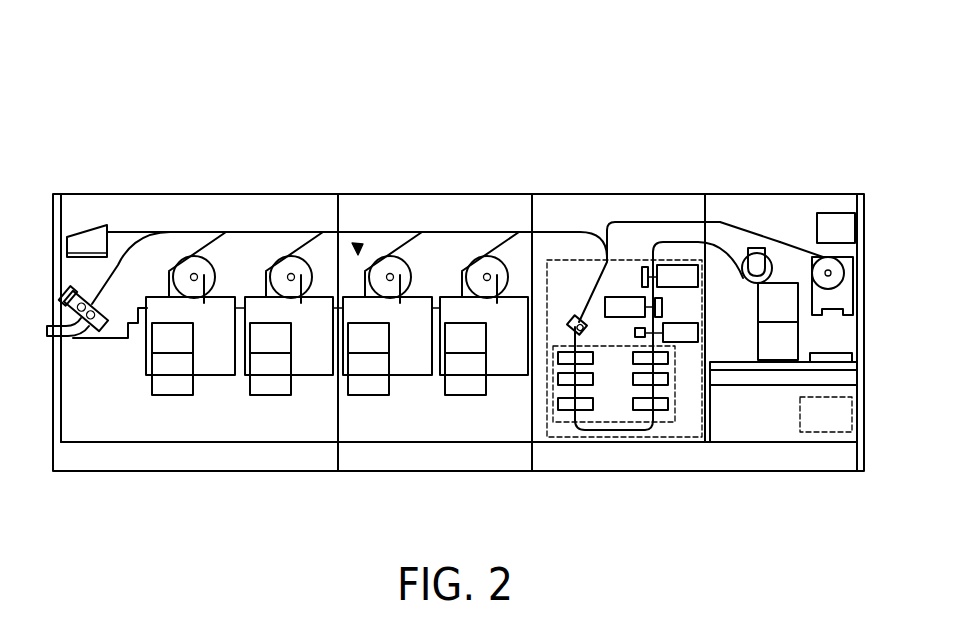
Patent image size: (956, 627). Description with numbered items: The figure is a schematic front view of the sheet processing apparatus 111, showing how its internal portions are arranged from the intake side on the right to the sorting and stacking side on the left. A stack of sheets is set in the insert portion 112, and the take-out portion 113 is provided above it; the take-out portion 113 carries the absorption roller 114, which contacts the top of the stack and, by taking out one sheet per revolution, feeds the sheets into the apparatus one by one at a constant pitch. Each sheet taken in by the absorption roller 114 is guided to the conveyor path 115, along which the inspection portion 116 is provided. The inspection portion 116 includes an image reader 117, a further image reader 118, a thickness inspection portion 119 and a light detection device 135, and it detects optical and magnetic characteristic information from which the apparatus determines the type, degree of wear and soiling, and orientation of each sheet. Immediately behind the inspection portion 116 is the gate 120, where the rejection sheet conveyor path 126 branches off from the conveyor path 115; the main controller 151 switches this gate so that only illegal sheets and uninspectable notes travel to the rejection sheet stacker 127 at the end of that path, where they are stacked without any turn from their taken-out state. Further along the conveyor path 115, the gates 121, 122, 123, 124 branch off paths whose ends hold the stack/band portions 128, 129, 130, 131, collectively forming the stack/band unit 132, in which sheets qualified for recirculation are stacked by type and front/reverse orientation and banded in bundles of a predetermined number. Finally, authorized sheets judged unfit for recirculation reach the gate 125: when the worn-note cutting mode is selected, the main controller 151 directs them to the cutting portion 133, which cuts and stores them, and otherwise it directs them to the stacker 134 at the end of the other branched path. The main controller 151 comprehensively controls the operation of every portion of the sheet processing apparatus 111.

The sheet processing apparatus 111 is at (528, 126).
The insert portion 112 is at (775, 350).
The take-out portion 113 is at (758, 248).
The absorption roller 114 is at (744, 243).
The conveyor path 115 is at (727, 262).
The inspection portion 116 is at (566, 437).
The image reader 117 is at (618, 297).
The image reader 118 is at (674, 272).
The thickness inspection portion 119 is at (573, 316).
The gate 120 is at (607, 250).
The gate 121 is at (510, 232).
The gate 122 is at (412, 232).
The gate 123 is at (308, 232).
The gate 124 is at (220, 232).
The gate 125 is at (155, 232).
The rejection sheet conveyor path 126 is at (796, 250).
The rejection sheet stacker 127 is at (828, 265).
The stack/band portion 128 is at (503, 369).
The stack/band portion 129 is at (408, 369).
The stack/band portion 130 is at (307, 369).
The stack/band portion 131 is at (213, 369).
The stack/band unit 132 is at (358, 248).
The cutting portion 133 is at (97, 338).
The stacker 134 is at (83, 232).
The light detection device 135 is at (589, 412).
The main controller 151 is at (835, 432).